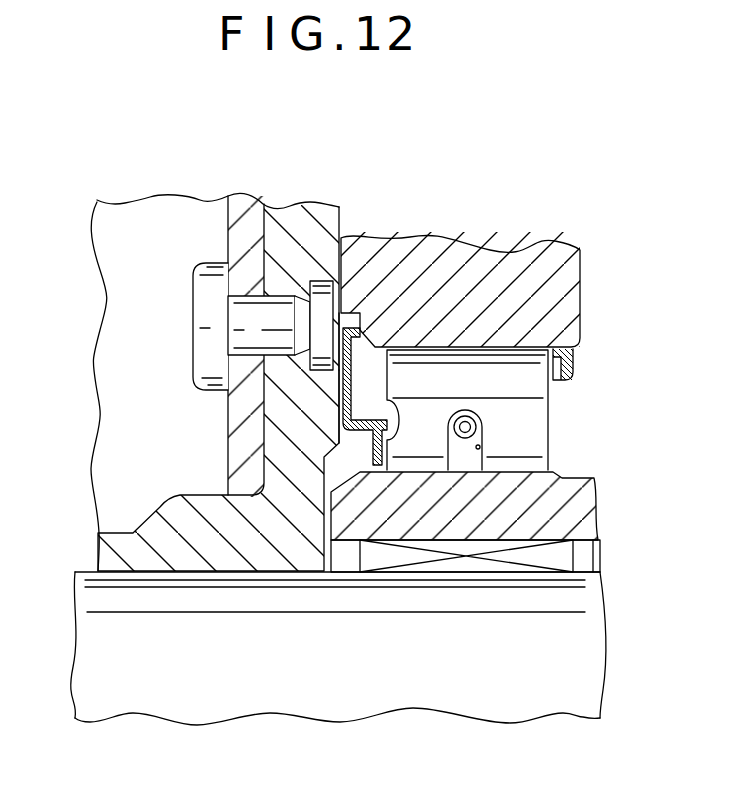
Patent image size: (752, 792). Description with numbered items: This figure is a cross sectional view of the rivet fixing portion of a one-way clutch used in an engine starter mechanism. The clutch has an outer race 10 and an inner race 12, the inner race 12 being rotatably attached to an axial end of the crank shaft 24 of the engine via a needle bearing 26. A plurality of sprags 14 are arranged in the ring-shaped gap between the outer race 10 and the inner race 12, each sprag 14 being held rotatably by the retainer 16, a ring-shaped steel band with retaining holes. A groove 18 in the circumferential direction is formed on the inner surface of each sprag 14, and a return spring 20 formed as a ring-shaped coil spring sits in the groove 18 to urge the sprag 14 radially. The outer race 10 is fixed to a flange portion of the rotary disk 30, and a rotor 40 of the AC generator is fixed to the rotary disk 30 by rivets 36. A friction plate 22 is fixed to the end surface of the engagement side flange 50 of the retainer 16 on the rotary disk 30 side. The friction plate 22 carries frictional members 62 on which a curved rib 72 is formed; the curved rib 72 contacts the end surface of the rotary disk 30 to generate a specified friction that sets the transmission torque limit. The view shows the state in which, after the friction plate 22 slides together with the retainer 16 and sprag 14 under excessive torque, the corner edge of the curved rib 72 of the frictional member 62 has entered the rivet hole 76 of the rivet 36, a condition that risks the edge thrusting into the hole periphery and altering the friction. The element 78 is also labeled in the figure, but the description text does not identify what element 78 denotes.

The outer race 10 is at (567, 299).
The inner race 12 is at (578, 499).
The sprag 14 is at (548, 398).
The retainer 16 is at (573, 357).
The groove 18 is at (481, 447).
The return spring 20 is at (482, 421).
The friction plate 22 is at (362, 433).
The crank shaft 24 is at (578, 664).
The needle bearing 26 is at (565, 561).
The rotary disk 30 is at (345, 218).
The rivet 36 is at (193, 315).
The rotor 40 is at (124, 217).
The engagement side flange 50 is at (366, 320).
The frictional member 62 is at (340, 407).
The curved rib 72 is at (338, 352).
The rivet hole 76 is at (326, 280).
The column plate 78 is at (279, 294).